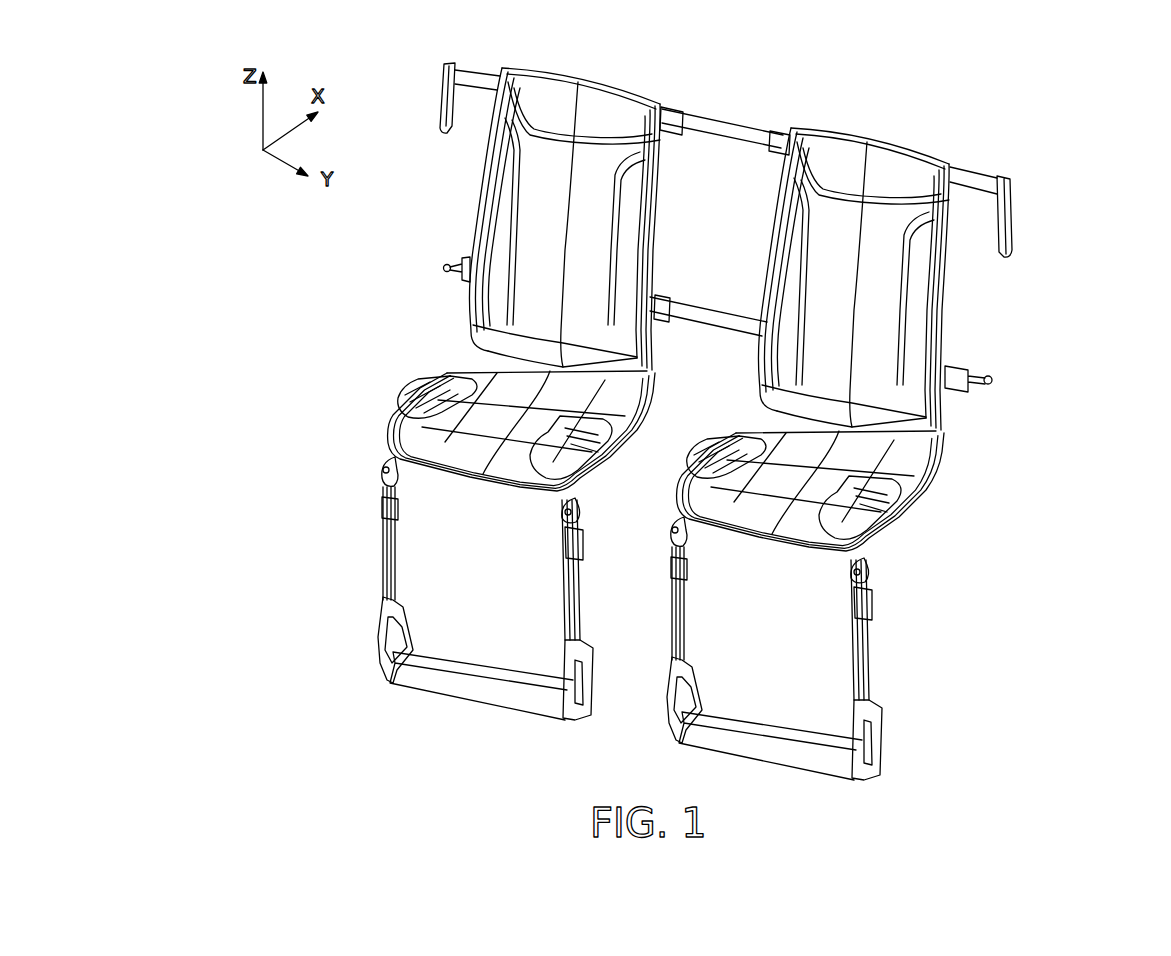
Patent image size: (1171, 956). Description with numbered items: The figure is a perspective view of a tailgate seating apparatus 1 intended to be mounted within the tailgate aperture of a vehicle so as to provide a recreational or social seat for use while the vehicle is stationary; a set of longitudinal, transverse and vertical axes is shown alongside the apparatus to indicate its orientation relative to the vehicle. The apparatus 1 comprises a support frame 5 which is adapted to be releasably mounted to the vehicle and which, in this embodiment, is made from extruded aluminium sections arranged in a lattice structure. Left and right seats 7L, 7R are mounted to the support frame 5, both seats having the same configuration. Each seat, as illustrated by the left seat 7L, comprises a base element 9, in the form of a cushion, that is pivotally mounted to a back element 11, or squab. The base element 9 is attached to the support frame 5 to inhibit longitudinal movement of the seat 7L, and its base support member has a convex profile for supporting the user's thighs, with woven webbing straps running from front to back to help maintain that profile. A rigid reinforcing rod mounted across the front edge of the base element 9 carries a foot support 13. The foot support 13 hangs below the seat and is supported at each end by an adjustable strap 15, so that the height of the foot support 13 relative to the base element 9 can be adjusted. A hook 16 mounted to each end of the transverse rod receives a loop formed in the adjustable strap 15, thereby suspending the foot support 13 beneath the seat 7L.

The tailgate seating apparatus 1 is at (661, 421).
The support frame 5 is at (1056, 203).
The left seat 7L is at (426, 394).
The right seat 7R is at (964, 551).
The base element 9 is at (412, 396).
The back element 11 is at (503, 200).
The foot support 13 is at (341, 679).
The adjustable strap 15 is at (383, 532).
The hook 16 is at (386, 460).